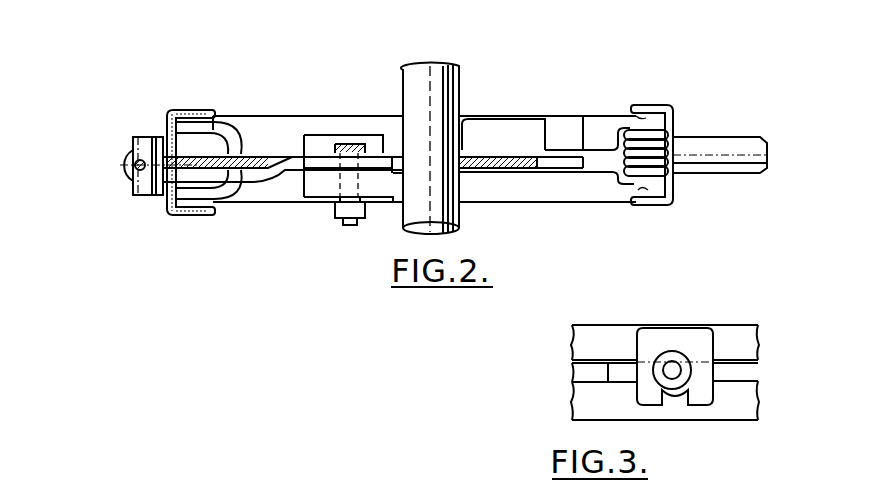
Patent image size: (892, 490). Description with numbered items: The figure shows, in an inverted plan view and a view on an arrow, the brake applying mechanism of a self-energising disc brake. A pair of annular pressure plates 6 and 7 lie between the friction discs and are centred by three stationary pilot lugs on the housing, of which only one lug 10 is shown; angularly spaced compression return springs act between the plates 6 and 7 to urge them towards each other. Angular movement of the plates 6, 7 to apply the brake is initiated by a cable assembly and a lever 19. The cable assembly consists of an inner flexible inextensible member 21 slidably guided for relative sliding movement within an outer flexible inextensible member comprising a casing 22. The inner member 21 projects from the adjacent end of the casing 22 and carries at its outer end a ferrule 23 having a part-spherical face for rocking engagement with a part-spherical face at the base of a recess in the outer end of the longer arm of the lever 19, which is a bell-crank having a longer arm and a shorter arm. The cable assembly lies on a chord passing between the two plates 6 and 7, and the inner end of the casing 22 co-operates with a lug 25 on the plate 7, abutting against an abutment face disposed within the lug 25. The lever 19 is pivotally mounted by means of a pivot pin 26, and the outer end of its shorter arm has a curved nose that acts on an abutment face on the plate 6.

In FIG. 2, the annular pressure plate 6 is at (278, 130).
In FIG. 3, the annular pressure plate 6 is at (744, 405).
In FIG. 2, the annular pressure plate 7 is at (265, 190).
In FIG. 3, the annular pressure plate 7 is at (606, 335).
In FIG. 2, the pilot lug 10 is at (446, 86).
In FIG. 2, the lever 19 is at (200, 176).
In FIG. 2, the inner flexible inextensible member 21 is at (138, 170).
In FIG. 3, the inner flexible inextensible member 21 is at (671, 378).
In FIG. 3, the casing 22 is at (681, 358).
In FIG. 2, the ferrule 23 is at (130, 162).
In FIG. 3, the lug 25 is at (658, 340).
In FIG. 2, the pivot pin 26 is at (346, 145).